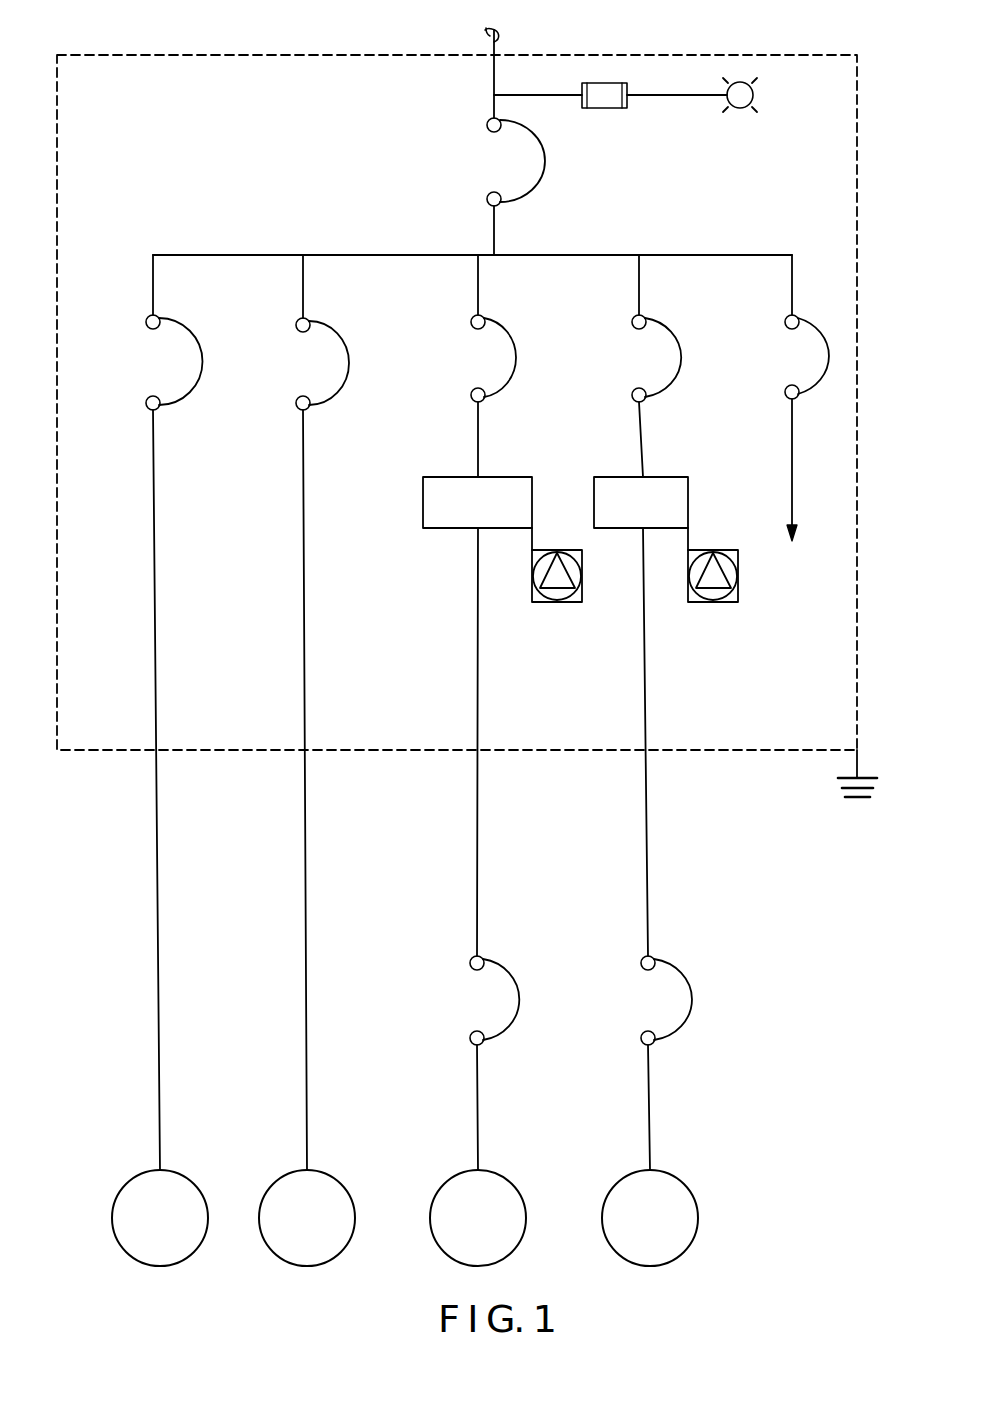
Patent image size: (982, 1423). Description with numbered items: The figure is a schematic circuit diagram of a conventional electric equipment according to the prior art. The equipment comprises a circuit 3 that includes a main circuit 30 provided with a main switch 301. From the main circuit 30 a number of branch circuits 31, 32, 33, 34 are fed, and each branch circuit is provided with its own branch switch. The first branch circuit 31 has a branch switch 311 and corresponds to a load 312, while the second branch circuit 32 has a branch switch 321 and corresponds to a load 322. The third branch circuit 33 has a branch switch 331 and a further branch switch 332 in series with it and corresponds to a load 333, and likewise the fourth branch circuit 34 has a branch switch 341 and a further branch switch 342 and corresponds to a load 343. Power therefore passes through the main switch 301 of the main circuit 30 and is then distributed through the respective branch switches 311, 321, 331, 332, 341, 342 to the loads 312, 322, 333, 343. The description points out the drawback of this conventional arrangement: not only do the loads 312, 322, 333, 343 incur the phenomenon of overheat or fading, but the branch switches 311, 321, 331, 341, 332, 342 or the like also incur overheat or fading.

The circuit 3 is at (126, 783).
The main circuit 30 is at (501, 52).
The main switch 301 is at (547, 158).
The branch circuit 31 is at (173, 752).
The branch switch 311 is at (205, 360).
The load 312 is at (192, 1178).
The branch circuit 32 is at (319, 760).
The branch switch 321 is at (348, 360).
The load 322 is at (335, 1170).
The branch circuit 33 is at (502, 760).
The branch switch 331 is at (523, 360).
The branch switch 332 is at (523, 980).
The load 333 is at (503, 1172).
The branch circuit 34 is at (657, 760).
The branch switch 341 is at (692, 355).
The branch switch 342 is at (688, 970).
The load 343 is at (675, 1173).